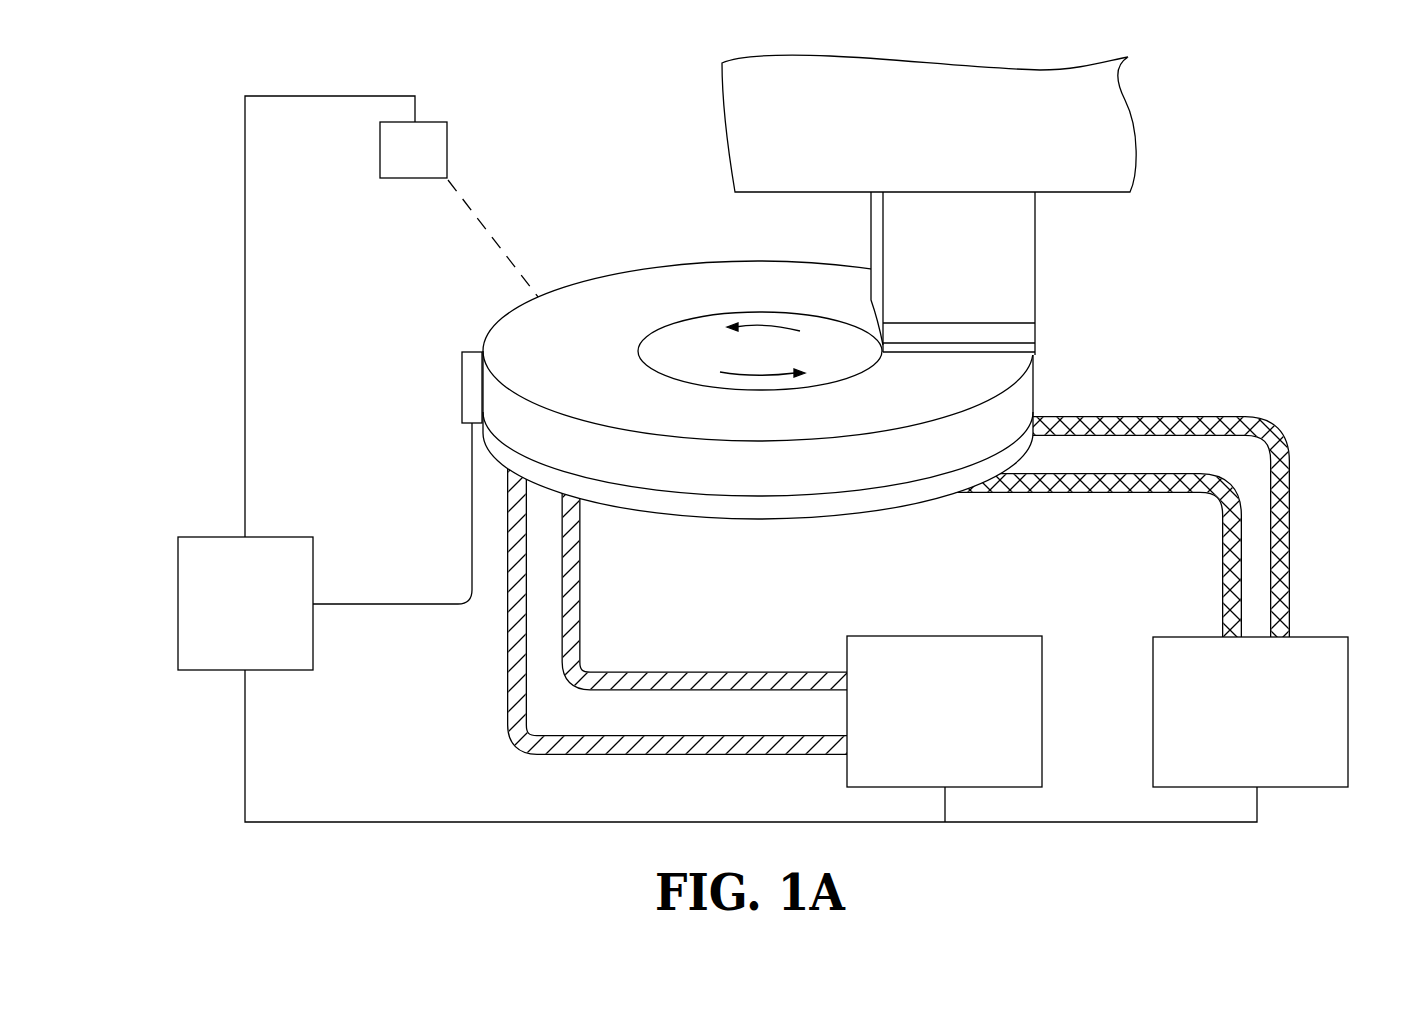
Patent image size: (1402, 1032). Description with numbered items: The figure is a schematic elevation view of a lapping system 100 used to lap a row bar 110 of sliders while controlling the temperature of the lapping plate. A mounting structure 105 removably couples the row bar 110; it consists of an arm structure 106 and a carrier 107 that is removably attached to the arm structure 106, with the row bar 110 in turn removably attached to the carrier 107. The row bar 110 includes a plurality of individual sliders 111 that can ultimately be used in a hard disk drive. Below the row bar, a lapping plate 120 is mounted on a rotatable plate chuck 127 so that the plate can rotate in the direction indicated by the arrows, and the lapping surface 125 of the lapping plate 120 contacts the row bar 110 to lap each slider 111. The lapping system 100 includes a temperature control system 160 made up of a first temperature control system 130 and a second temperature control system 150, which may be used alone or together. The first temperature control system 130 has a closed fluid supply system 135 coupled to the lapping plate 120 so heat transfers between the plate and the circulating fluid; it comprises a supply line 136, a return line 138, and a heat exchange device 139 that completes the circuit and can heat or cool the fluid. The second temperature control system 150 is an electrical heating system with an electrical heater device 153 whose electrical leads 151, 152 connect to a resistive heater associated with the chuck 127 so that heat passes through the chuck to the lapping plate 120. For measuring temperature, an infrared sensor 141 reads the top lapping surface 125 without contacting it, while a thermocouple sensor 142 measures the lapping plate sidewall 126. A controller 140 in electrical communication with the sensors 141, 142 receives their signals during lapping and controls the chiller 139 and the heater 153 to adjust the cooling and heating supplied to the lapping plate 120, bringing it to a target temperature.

The lapping system 100 is at (875, 297).
The mounting structure 105 is at (964, 205).
The arm structure 106 is at (909, 129).
The carrier 107 is at (951, 248).
The row bar 110 is at (1015, 333).
The slider 111 is at (935, 332).
The lapping plate 120 is at (800, 413).
The lapping surface 125 is at (586, 401).
The lapping plate sidewall 126 is at (775, 477).
The plate chuck 127 is at (752, 505).
The first temperature control system 130 is at (969, 669).
The closed fluid supply system 135 is at (642, 605).
The supply line 136 is at (507, 675).
The return line 138 is at (660, 675).
The heat exchange device 139 is at (927, 724).
The controller 140 is at (228, 616).
The infrared sensor 141 is at (437, 143).
The thermocouple sensor 142 is at (472, 362).
The second temperature control system 150 is at (1153, 556).
The electrical lead 151 is at (1223, 560).
The electrical lead 152 is at (1290, 527).
The electrical heater device 153 is at (1233, 724).
The temperature control system 160 is at (1095, 536).